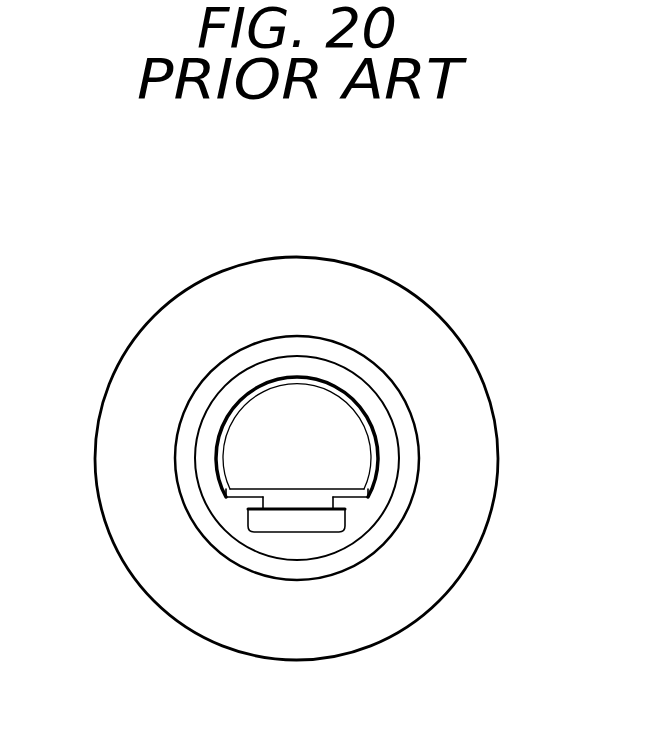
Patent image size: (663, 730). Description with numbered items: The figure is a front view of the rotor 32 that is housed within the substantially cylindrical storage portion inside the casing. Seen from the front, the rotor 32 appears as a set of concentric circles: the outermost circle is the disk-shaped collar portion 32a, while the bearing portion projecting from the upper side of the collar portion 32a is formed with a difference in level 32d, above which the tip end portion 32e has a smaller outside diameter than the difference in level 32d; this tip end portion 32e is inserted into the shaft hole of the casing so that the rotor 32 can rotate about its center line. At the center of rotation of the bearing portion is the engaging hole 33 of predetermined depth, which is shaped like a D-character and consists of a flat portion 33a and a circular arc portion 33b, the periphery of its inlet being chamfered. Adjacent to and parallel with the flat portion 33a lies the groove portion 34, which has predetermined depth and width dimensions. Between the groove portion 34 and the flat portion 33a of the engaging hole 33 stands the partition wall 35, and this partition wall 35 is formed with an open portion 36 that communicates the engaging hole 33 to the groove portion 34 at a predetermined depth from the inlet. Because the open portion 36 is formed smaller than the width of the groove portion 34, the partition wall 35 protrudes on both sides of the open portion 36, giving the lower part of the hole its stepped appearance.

The rotor 32 is at (346, 232).
The collar portion 32a is at (378, 292).
The difference in level 32d is at (268, 347).
The tip end portion 32e is at (228, 382).
The engaging hole 33 is at (329, 420).
The flat portion 33a is at (345, 487).
The circular arc portion 33b is at (243, 407).
The groove portion 34 is at (292, 520).
The partition wall 35 is at (265, 492).
The open portion 36 is at (306, 500).